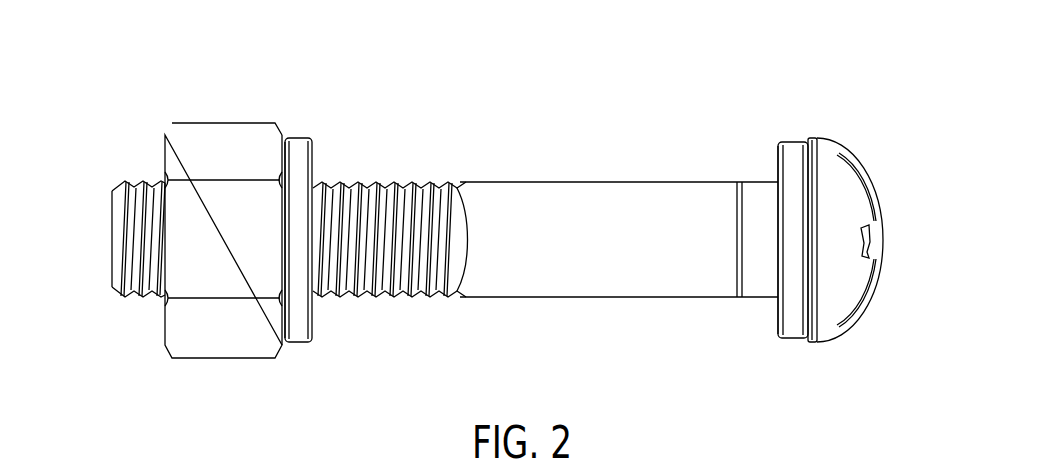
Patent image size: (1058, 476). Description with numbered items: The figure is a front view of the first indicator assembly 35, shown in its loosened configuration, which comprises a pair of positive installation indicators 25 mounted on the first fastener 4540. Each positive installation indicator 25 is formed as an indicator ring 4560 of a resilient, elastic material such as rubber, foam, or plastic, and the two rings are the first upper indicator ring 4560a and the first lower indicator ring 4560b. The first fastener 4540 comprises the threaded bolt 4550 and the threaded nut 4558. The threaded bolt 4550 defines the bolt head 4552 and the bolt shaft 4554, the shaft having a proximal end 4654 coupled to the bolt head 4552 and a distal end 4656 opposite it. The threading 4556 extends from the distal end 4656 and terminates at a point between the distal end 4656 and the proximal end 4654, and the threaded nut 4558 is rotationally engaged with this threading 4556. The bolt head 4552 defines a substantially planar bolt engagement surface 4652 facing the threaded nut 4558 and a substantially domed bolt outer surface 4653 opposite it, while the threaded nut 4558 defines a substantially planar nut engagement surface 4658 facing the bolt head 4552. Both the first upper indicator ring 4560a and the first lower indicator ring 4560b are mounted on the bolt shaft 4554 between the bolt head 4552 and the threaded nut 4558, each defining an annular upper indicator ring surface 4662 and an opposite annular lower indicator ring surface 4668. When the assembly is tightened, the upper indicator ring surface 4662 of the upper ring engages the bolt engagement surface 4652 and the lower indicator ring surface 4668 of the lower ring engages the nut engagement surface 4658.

The first indicator assembly 35 is at (489, 70).
The positive installation indicator 25 is at (546, 181).
The first fastener 4540 is at (568, 152).
The threaded bolt 4550 is at (590, 316).
The bolt head 4552 is at (853, 203).
The bolt shaft 4554 is at (655, 197).
The threading 4556 is at (393, 195).
The threaded nut 4558 is at (205, 143).
The indicator ring 4560 is at (546, 196).
The first upper indicator ring 4560a is at (792, 160).
The first lower indicator ring 4560b is at (297, 148).
The bolt engagement surface 4652 is at (805, 303).
The bolt outer surface 4653 is at (855, 288).
The proximal end 4654 is at (770, 205).
The distal end 4656 is at (124, 238).
The nut engagement surface 4658 is at (285, 324).
The upper indicator ring surface 4662 is at (815, 250).
The lower indicator ring surface 4668 is at (280, 249).